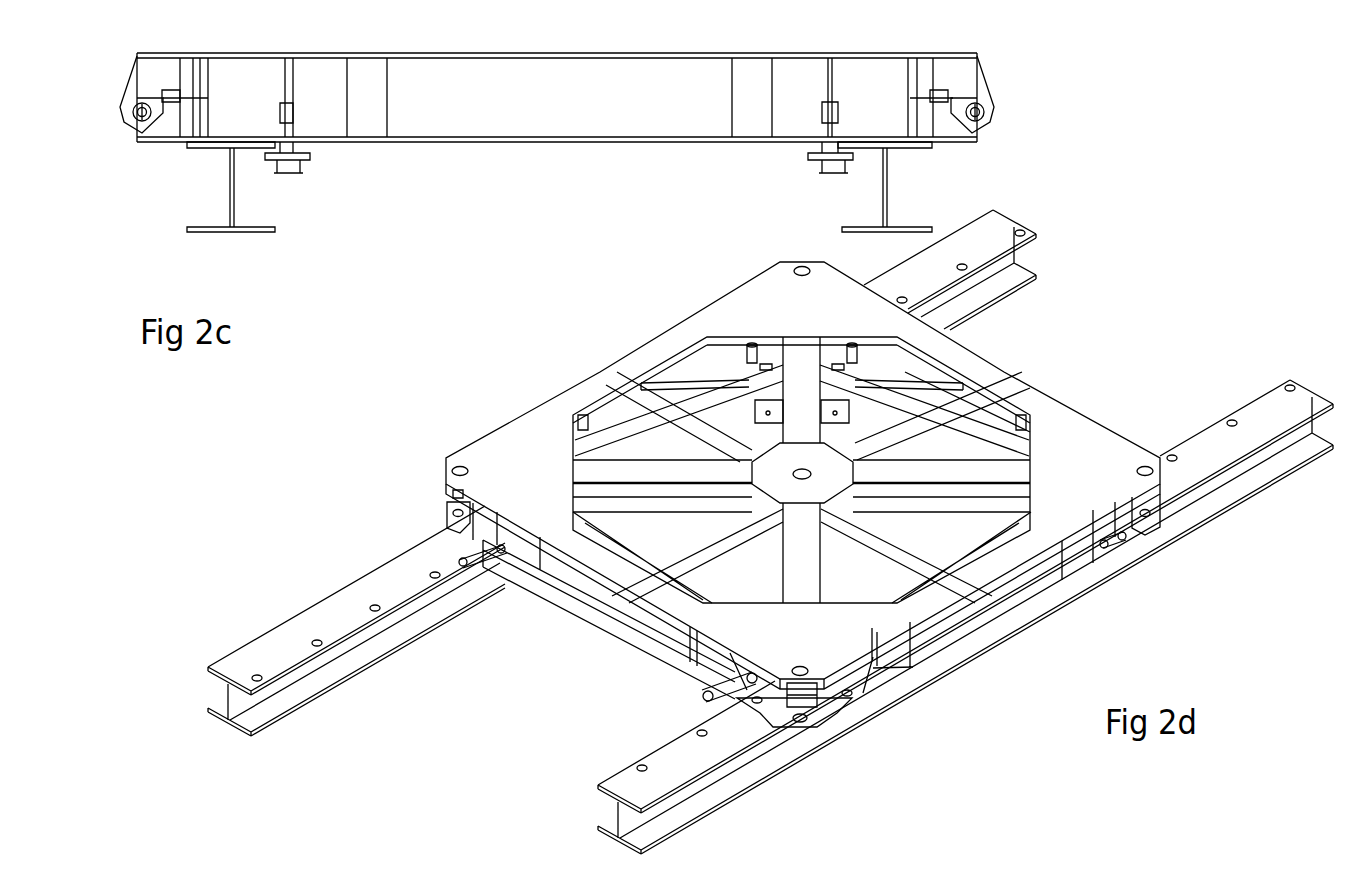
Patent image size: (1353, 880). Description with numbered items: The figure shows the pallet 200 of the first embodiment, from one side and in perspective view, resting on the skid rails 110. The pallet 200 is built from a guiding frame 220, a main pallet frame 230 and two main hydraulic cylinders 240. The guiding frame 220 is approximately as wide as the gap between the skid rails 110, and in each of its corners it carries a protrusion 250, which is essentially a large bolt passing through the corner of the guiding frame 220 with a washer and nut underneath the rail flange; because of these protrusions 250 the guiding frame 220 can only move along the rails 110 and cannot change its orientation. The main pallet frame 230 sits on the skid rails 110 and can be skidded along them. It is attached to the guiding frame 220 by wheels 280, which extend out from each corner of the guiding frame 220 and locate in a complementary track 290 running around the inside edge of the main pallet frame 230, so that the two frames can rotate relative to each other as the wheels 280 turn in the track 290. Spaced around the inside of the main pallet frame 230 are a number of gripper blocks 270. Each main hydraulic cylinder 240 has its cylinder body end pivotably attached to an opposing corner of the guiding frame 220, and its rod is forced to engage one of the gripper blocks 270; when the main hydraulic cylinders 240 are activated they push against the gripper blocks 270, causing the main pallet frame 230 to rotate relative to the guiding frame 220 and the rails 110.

In FIG. 2C, the skid rails 110 is at (232, 196).
In FIG. 2D, the skid rails 110 is at (977, 243).
In FIG. 2C, the pallet 200 is at (1070, 86).
In FIG. 2D, the pallet 200 is at (473, 397).
In FIG. 2D, the guiding frame 220 is at (622, 542).
In FIG. 2C, the main pallet frame 230 is at (497, 117).
In FIG. 2D, the main pallet frame 230 is at (548, 447).
In FIG. 2D, the main hydraulic cylinders 240 is at (890, 383).
In FIG. 2C, the protrusions 250 is at (292, 175).
In FIG. 2D, the gripper blocks 270 is at (850, 342).
In FIG. 2C, the wheels 280 is at (180, 93).
In FIG. 2C, the track 290 is at (165, 98).